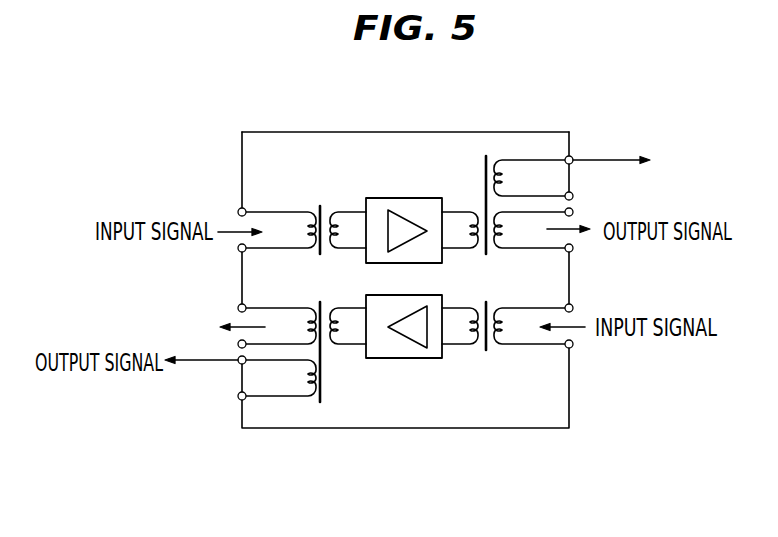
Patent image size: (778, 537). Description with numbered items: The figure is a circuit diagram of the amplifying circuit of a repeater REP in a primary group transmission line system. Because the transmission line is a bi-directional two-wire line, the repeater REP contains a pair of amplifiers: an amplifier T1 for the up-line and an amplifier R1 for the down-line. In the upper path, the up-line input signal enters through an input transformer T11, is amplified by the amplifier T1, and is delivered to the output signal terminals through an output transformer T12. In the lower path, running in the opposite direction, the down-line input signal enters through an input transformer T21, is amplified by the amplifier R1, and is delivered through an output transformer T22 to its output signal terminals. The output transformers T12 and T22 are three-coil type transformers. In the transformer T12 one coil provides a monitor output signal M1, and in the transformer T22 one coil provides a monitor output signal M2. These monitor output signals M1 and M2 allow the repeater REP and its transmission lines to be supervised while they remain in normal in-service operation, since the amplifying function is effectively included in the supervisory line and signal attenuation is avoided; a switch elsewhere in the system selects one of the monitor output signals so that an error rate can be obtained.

The repeater REP is at (405, 263).
The input transformer T11 is at (302, 215).
The amplifier T1 is at (404, 215).
The output transformer T12 is at (507, 195).
The monitor output signal M1 is at (611, 143).
The input transformer T21 is at (507, 342).
The amplifier R1 is at (404, 344).
The output transformer T22 is at (302, 364).
The monitor output signal M2 is at (201, 380).